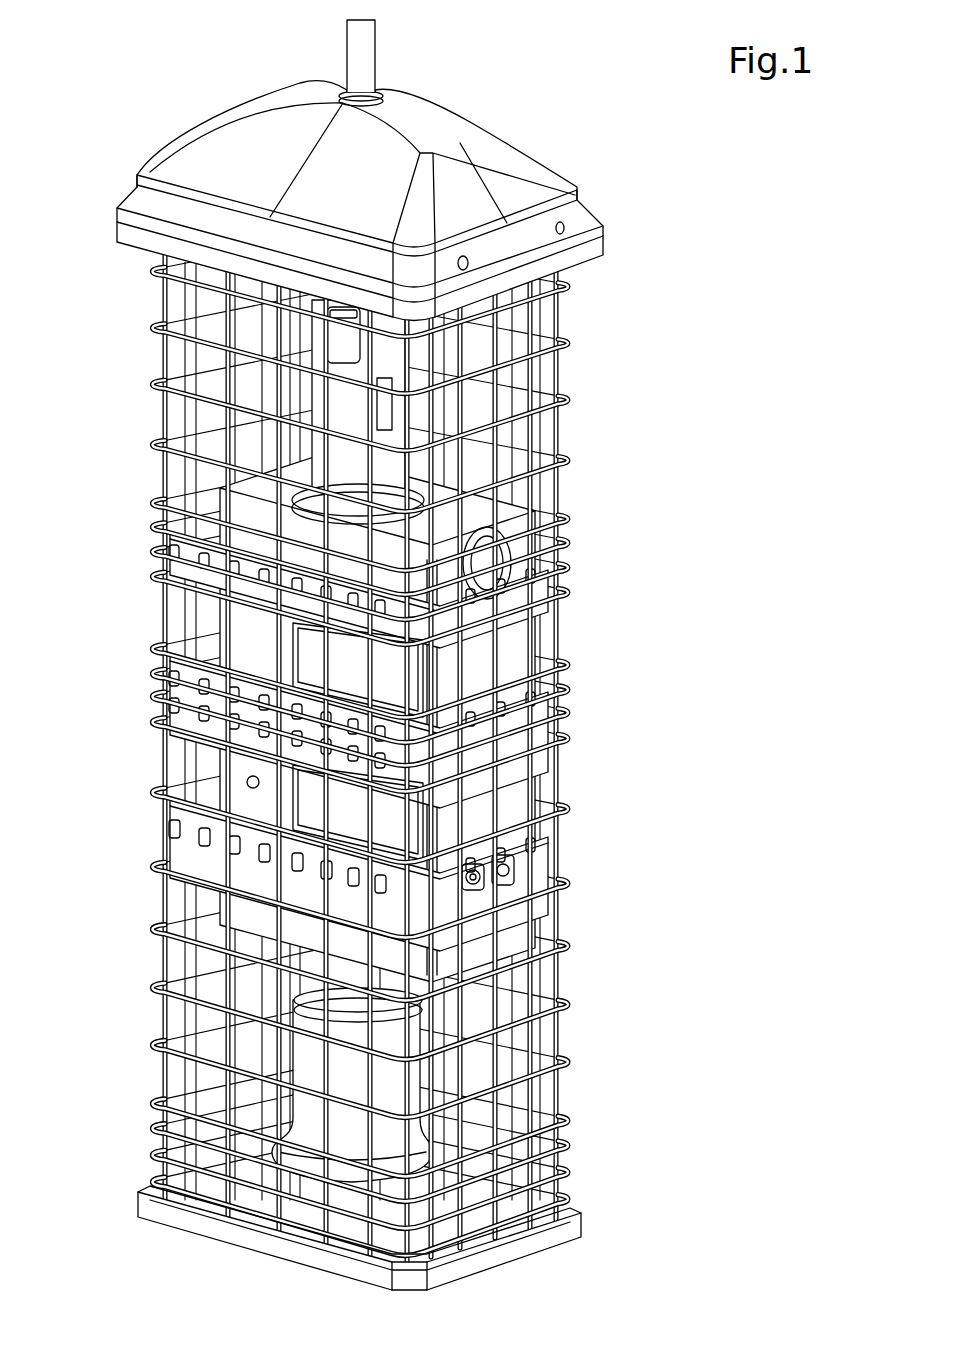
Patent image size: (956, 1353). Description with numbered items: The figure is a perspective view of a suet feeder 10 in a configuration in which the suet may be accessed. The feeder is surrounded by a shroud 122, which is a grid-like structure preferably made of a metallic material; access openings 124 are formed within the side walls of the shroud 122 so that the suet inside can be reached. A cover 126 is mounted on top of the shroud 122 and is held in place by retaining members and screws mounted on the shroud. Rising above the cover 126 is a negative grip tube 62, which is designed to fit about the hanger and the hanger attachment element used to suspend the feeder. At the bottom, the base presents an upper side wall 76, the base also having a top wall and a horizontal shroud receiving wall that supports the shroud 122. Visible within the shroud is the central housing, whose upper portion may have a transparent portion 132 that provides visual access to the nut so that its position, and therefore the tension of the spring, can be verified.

The suet feeder 10 is at (736, 181).
The negative grip tube 62 is at (367, 65).
The cover 126 is at (470, 120).
The transparent portion 132 is at (337, 338).
The access openings 124 is at (414, 680).
The shroud 122 is at (563, 948).
The upper side wall 76 is at (527, 1245).